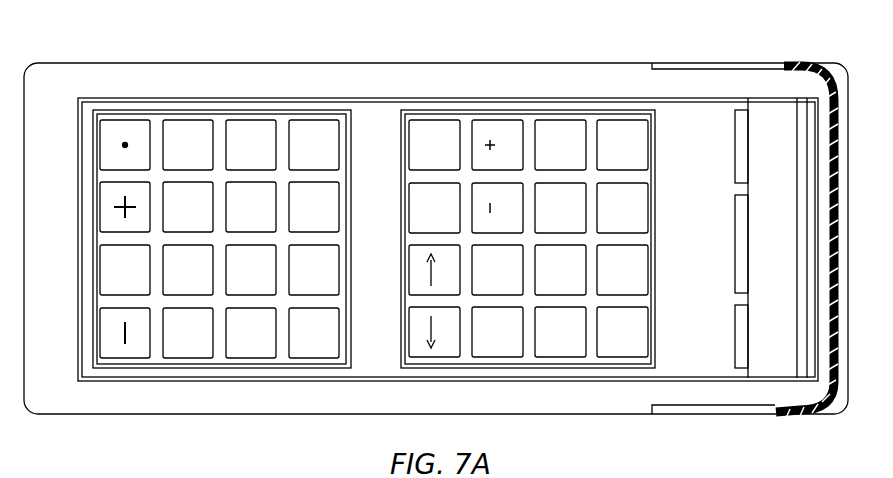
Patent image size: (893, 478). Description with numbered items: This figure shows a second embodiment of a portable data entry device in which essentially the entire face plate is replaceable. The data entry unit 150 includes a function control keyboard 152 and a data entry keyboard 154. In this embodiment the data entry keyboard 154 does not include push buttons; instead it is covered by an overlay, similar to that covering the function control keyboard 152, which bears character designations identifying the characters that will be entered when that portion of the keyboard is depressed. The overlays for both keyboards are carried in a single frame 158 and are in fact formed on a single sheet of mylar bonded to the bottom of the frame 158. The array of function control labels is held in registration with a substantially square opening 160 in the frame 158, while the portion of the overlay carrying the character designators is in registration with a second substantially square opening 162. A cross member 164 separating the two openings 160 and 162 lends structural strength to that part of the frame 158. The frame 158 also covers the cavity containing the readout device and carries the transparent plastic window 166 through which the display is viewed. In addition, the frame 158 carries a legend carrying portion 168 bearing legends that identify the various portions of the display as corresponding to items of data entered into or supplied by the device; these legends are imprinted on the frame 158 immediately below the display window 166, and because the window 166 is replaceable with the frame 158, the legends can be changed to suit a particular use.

The data entry unit 150 is at (600, 398).
The function control keyboard 152 is at (497, 125).
The data entry keyboard 154 is at (218, 110).
The frame 158 is at (682, 358).
The substantially square opening 160 is at (658, 262).
The second substantially square opening 162 is at (350, 250).
The cross member 164 is at (377, 118).
The transparent plastic window 166 is at (772, 366).
The legend carrying portion 168 is at (744, 372).